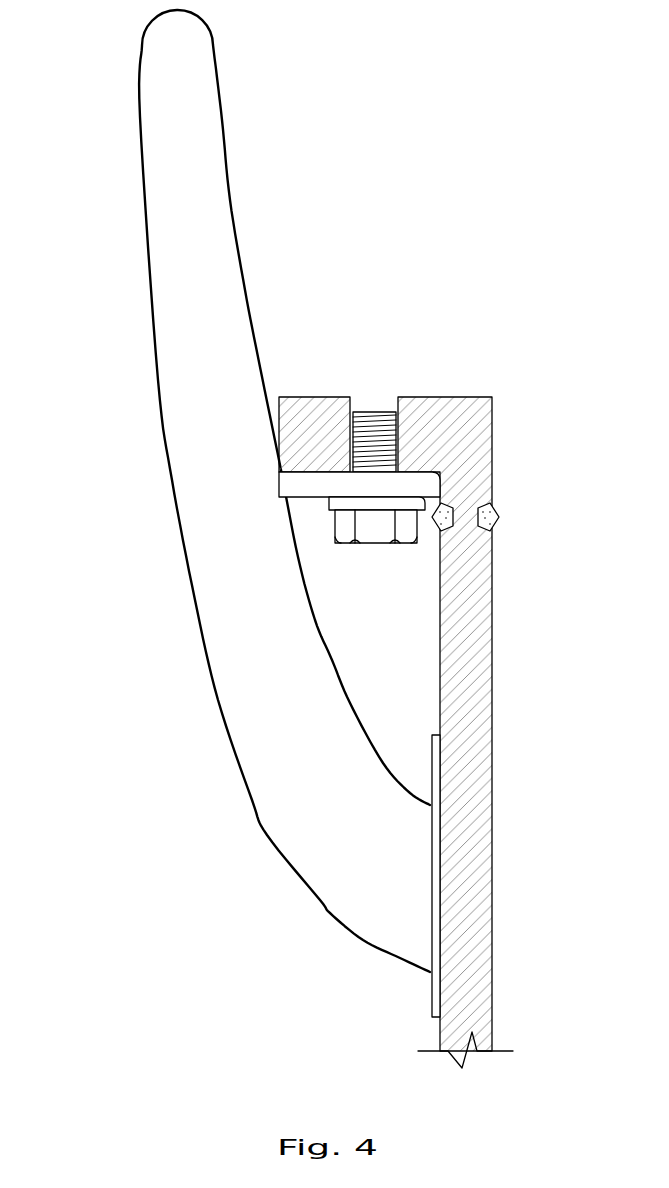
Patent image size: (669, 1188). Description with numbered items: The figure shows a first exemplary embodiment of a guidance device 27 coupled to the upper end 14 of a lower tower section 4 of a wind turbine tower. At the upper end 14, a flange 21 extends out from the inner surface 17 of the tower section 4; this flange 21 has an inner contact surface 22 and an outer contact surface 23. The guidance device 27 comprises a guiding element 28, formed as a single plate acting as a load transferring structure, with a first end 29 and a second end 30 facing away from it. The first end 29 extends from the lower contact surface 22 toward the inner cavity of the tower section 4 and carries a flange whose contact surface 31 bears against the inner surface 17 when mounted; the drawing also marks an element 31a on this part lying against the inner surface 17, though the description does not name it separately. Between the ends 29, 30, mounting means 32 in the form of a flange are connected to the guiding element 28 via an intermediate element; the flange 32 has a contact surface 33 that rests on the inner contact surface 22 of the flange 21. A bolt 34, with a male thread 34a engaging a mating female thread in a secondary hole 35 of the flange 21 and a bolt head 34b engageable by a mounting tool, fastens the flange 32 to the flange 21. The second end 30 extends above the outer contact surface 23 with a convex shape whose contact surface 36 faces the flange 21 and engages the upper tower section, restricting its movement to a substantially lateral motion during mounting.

The tower section 4 is at (500, 632).
The upper end 14 is at (292, 388).
The inner surface 17 is at (438, 692).
The flange 21 is at (323, 410).
The inner contact surface 22 is at (436, 500).
The outer contact surface 23 is at (480, 388).
The guidance device 27 is at (156, 380).
The guiding element 28 is at (233, 463).
The first end 29 is at (262, 838).
The second end 30 is at (138, 117).
The contact surface 31 is at (436, 998).
The support strip 31a is at (451, 878).
The mounting means 32 is at (300, 487).
The contact surface 33 is at (408, 460).
The bolt 34 is at (383, 543).
The male thread 34a is at (383, 410).
The bolt head 34b is at (371, 535).
The secondary hole 35 is at (367, 388).
The contact surface 36 is at (226, 154).